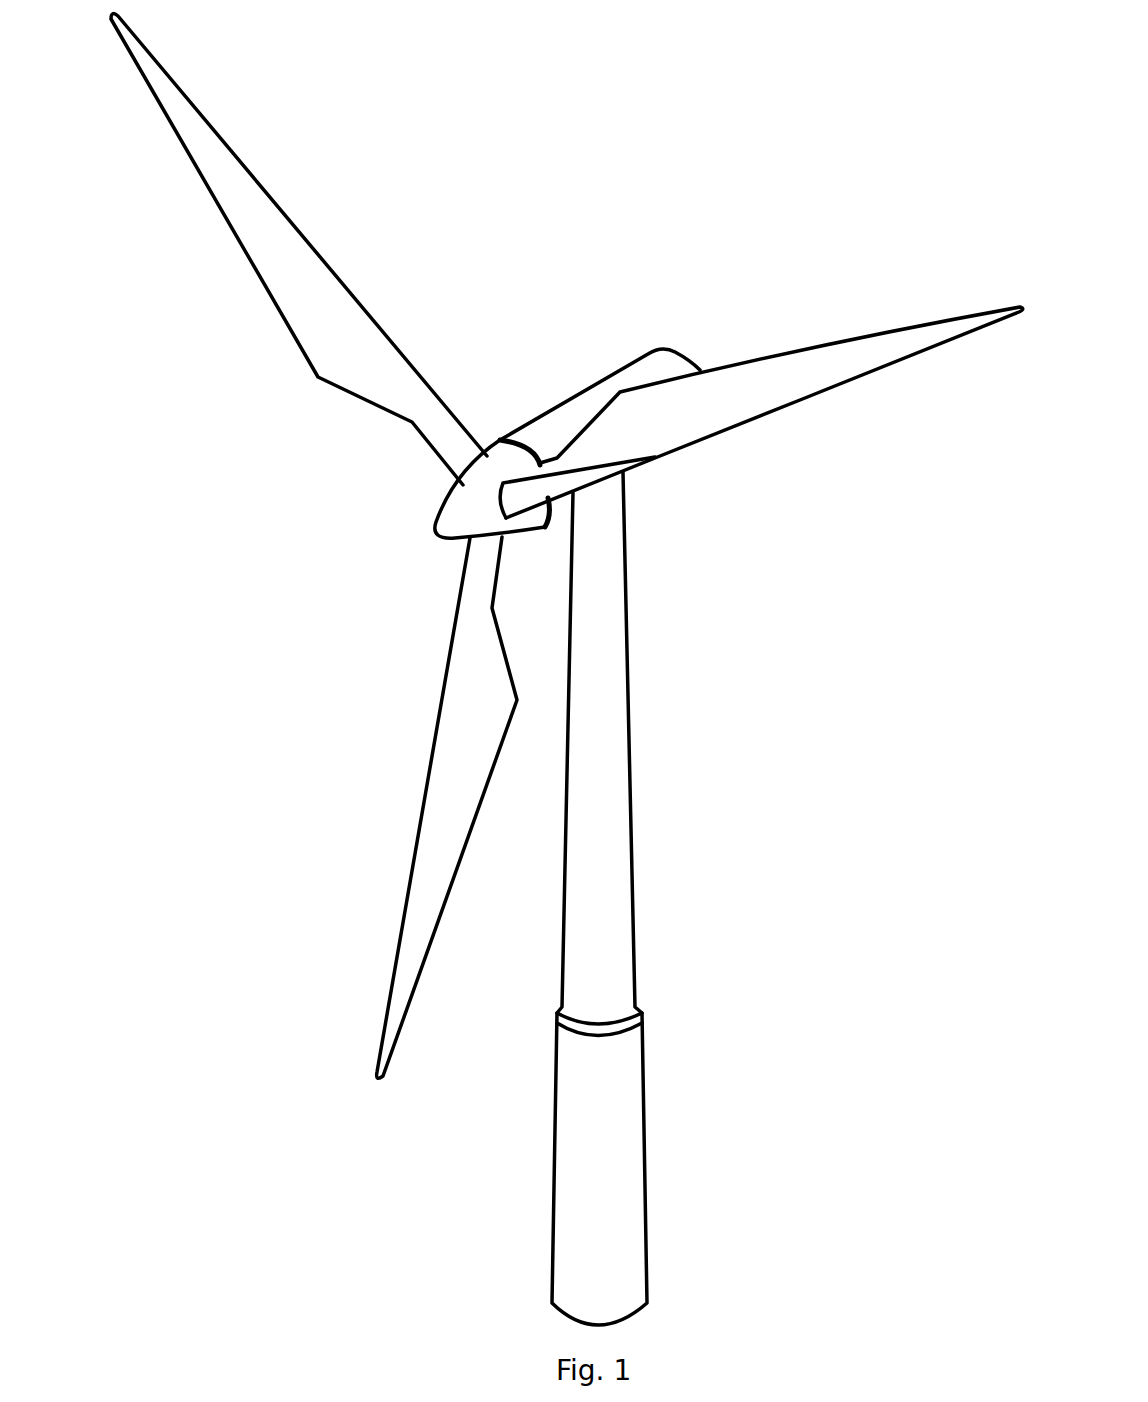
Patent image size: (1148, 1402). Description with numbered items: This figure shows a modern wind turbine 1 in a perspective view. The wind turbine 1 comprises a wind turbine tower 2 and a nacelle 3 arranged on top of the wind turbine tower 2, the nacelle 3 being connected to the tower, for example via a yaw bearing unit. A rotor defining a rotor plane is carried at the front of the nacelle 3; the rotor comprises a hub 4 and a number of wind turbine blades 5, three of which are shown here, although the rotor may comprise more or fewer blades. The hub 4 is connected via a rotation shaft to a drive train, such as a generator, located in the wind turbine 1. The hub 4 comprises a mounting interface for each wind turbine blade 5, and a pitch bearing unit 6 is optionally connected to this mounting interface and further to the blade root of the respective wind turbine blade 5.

The wind turbine 1 is at (734, 835).
The wind turbine tower 2 is at (618, 750).
The nacelle 3 is at (557, 418).
The hub 4 is at (455, 513).
The wind turbine blades 5 is at (333, 347).
The pitch bearing unit 6 is at (503, 514).